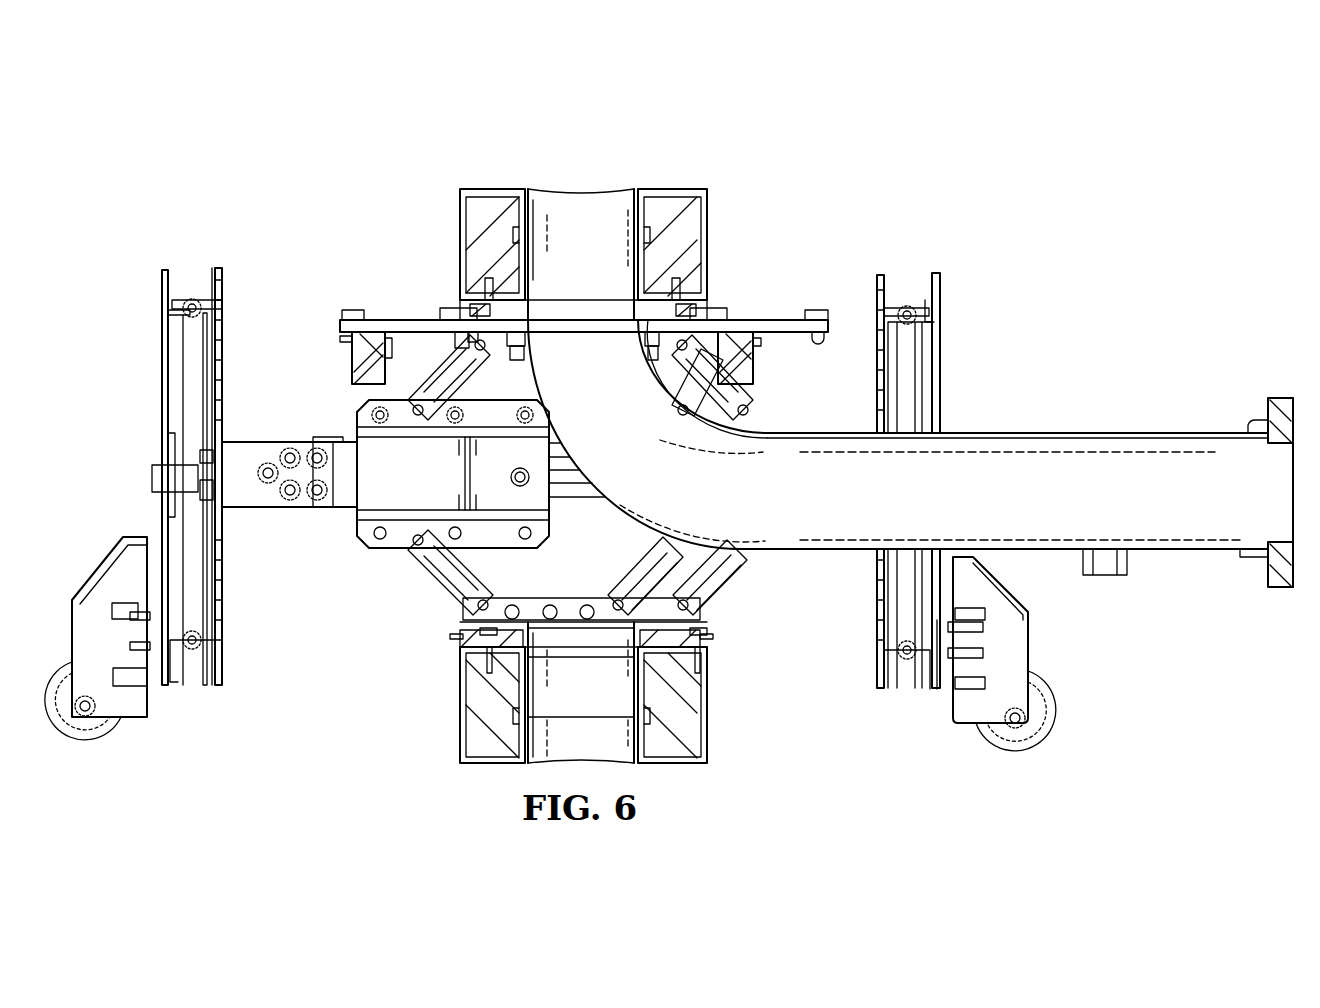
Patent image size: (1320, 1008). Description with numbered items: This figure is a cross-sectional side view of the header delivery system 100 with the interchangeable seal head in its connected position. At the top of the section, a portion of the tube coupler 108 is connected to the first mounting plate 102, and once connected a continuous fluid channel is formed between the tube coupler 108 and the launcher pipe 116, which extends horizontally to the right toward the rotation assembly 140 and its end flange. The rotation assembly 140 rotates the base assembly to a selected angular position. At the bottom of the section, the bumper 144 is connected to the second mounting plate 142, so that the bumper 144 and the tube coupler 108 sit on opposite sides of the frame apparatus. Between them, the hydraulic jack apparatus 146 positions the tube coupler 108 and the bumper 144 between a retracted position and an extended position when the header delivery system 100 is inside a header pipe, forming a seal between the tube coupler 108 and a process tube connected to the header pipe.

The header delivery system 100 is at (243, 155).
The first mounting plate 102 is at (627, 317).
The tube coupler 108 is at (708, 212).
The launcher pipe 116 is at (1145, 432).
The rotation assembly 140 is at (153, 287).
The second mounting plate 142 is at (535, 620).
The bumper 144 is at (708, 722).
The hydraulic jack apparatus 146 is at (392, 550).